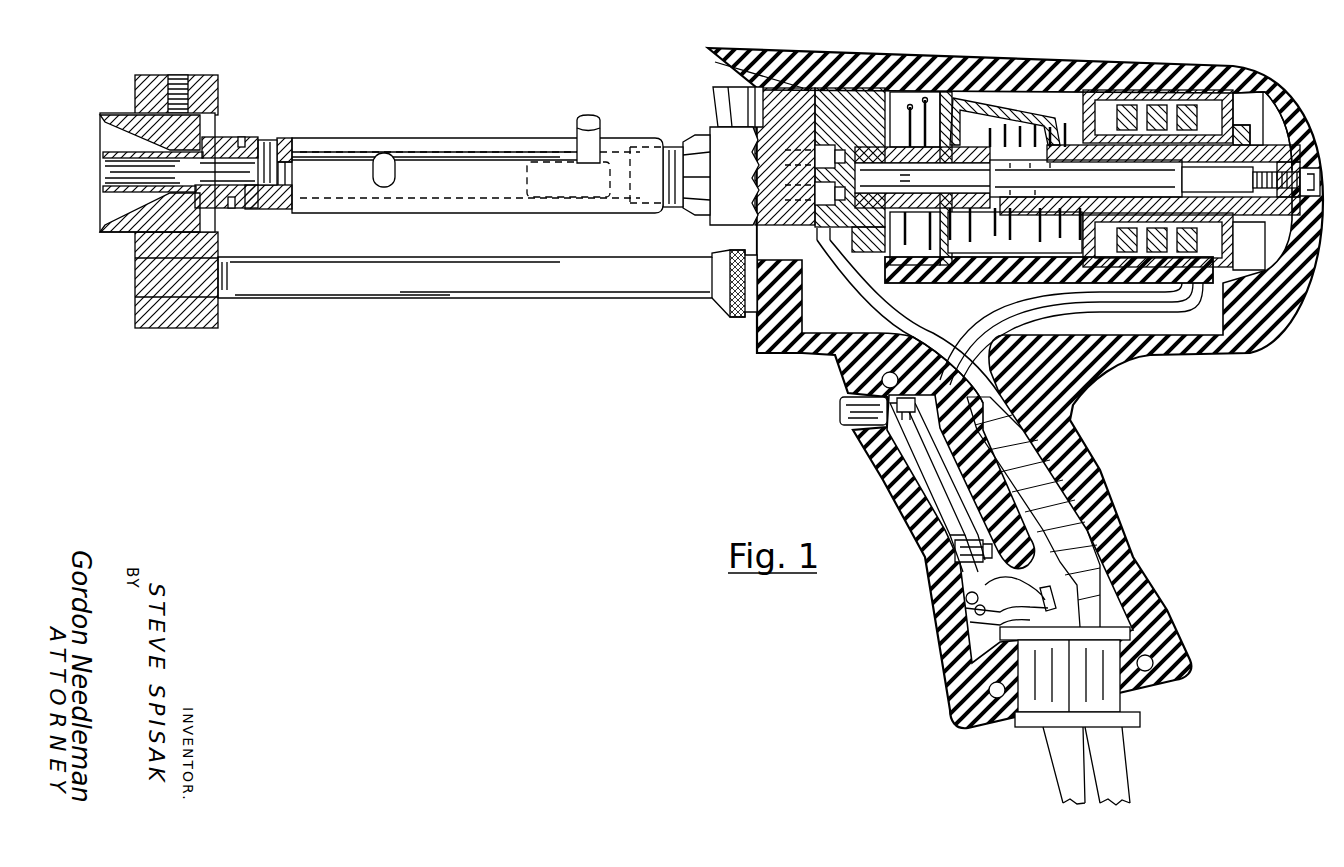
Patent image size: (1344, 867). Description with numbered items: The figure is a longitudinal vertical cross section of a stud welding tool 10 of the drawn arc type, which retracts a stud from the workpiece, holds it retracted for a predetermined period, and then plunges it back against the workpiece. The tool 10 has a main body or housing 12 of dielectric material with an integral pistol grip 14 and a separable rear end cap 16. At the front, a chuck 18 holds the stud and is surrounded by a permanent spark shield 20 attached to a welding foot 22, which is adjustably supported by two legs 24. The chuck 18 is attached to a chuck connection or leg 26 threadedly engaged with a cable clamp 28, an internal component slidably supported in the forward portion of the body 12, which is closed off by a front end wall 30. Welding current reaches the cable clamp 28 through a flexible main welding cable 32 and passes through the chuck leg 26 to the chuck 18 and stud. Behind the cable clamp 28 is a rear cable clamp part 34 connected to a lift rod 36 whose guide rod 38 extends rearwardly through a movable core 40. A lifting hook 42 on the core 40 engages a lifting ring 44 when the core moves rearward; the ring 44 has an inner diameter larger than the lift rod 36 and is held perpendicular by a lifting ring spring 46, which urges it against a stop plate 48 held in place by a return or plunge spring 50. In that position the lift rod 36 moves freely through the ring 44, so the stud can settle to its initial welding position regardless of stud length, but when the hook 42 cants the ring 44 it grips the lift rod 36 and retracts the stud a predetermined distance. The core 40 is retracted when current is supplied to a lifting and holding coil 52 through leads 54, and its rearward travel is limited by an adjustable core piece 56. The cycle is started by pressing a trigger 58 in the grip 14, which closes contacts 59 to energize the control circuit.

The welding tool 10 is at (742, 384).
The main body or housing 12 is at (995, 49).
The pistol grip 14 is at (1128, 548).
The rear end cap 16 is at (1282, 335).
The chuck 18 is at (115, 153).
The spark shield 20 is at (120, 228).
The welding foot 22 is at (158, 328).
The legs 24 is at (300, 299).
The chuck connection or leg 26 is at (429, 130).
The cable clamp 28 is at (724, 116).
The front end wall 30 is at (712, 64).
The main welding cable 32 is at (866, 303).
The rear cable clamp part 34 is at (848, 255).
The lift rod 36 is at (924, 122).
The guide rod 38 is at (972, 230).
The movable core 40 is at (1076, 225).
The lifting hook 42 is at (1022, 110).
The lifting ring 44 is at (976, 140).
The lifting ring spring 46 is at (1010, 207).
The stop plate 48 is at (935, 286).
The return or plunge spring 50 is at (927, 215).
The lifting and holding coil 52 is at (1166, 92).
The leads 54 is at (985, 314).
The adjustable core piece 56 is at (1242, 232).
The trigger 58 is at (838, 426).
The contacts 59 is at (919, 405).